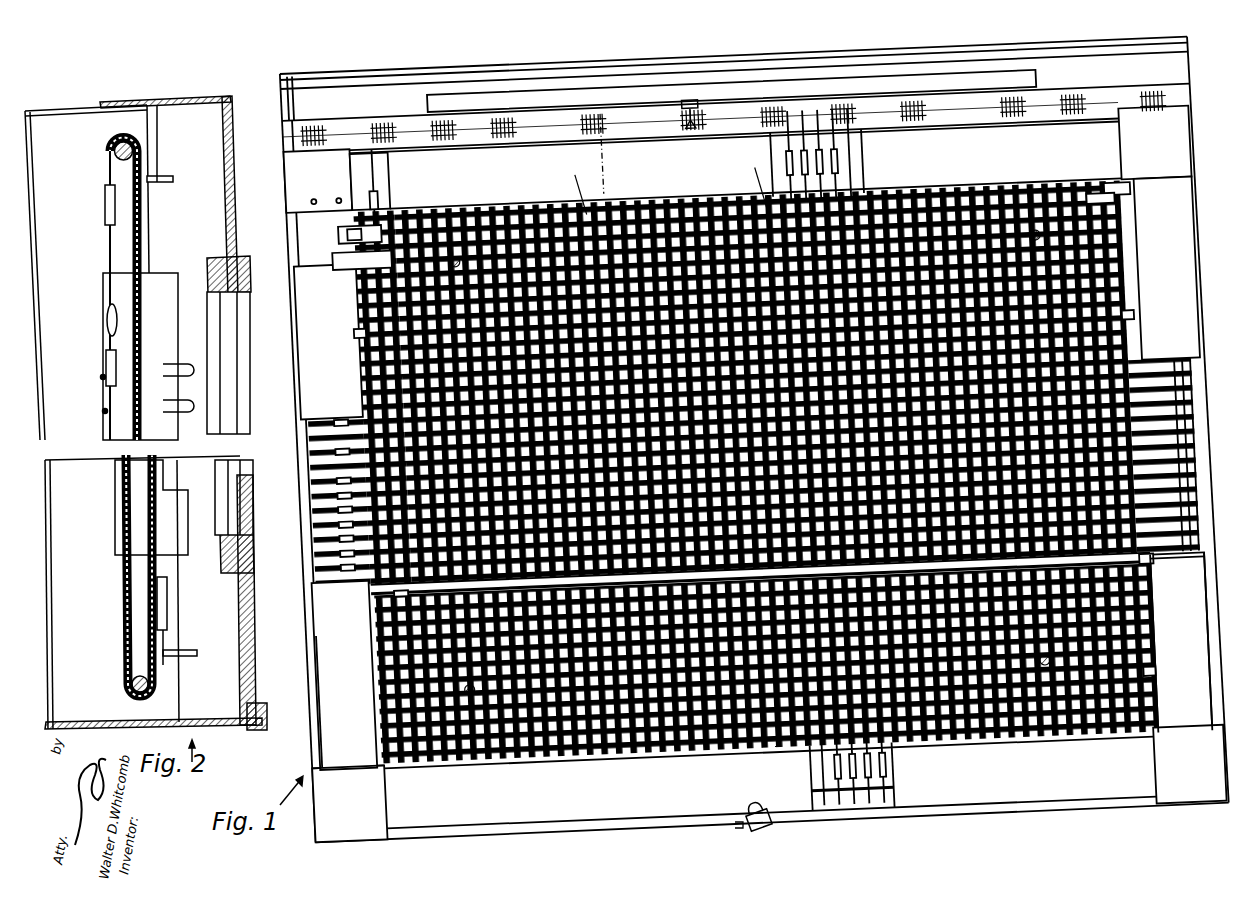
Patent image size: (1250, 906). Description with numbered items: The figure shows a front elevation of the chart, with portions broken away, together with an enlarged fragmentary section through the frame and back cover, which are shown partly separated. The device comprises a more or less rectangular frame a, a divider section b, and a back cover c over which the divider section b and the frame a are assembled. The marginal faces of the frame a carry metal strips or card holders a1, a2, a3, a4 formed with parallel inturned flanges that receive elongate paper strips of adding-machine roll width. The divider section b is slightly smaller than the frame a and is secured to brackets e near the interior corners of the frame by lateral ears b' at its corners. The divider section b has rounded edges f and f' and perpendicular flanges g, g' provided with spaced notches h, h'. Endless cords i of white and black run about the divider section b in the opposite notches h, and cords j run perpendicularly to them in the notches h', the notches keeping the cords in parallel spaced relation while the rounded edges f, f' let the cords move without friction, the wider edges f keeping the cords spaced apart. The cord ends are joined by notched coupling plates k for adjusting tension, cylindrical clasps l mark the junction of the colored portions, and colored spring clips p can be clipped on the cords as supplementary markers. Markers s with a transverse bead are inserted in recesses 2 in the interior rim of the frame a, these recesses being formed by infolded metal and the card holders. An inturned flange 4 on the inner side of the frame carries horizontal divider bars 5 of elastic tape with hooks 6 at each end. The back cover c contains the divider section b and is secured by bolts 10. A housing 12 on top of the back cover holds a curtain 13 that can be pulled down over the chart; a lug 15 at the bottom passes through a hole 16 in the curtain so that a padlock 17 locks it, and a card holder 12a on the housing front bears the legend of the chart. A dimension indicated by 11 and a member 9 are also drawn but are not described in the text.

In FIG. 1, the bolts 10 is at (312, 75).
In FIG. 1, the dimension arrow 11 is at (1213, 345).
In FIG. 1, the housing 12 is at (283, 91).
In FIG. 1, the card holder 12a is at (528, 97).
In FIG. 1, the curtain 13 is at (1083, 98).
In FIG. 1, the lug 15 is at (735, 826).
In FIG. 1, the hole 16 is at (690, 124).
In FIG. 1, the padlock 17 is at (770, 828).
In FIG. 1, the recesses 2 is at (590, 128).
In FIG. 2, the recesses 2 is at (238, 405).
In FIG. 2, the inturned flange 4 is at (212, 256).
In FIG. 1, the horizontal divider bars 5 is at (1060, 212).
In FIG. 1, the hooks 6 is at (372, 233).
In FIG. 2, the block 9 is at (176, 348).
In FIG. 1, the frame a is at (310, 832).
In FIG. 2, the frame a is at (246, 722).
In FIG. 1, the card holder a1 is at (313, 688).
In FIG. 2, the card holder a2 is at (238, 172).
In FIG. 1, the card holder a3 is at (1181, 642).
In FIG. 2, the card holder a3 is at (250, 341).
In FIG. 1, the card holder a4 is at (770, 783).
In FIG. 2, the card holder a4 is at (256, 661).
In FIG. 1, the divider section b is at (326, 261).
In FIG. 2, the divider section b is at (137, 417).
In FIG. 1, the lateral ears b' is at (320, 237).
In FIG. 2, the back cover c is at (36, 183).
In FIG. 1, the brackets e is at (317, 181).
In FIG. 1, the rounded edges f is at (747, 461).
In FIG. 1, the perpendicular flange g is at (747, 487).
In FIG. 1, the notches h is at (747, 512).
In FIG. 2, the notches h is at (183, 388).
In FIG. 1, the endless cords i is at (340, 432).
In FIG. 2, the endless cords i is at (101, 378).
In FIG. 1, the cords j is at (750, 742).
In FIG. 2, the cords j is at (124, 575).
In FIG. 2, the notched coupling plates k is at (108, 266).
In FIG. 1, the cylindrical clasps l is at (578, 205).
In FIG. 2, the cylindrical clasps l is at (168, 613).
In FIG. 1, the spring clips p is at (447, 258).
In FIG. 1, the markers s is at (345, 333).
In FIG. 1, the rounded edges f' is at (831, 447).
In FIG. 2, the rounded edges f' is at (109, 419).
In FIG. 1, the perpendicular flange g' is at (835, 450).
In FIG. 2, the perpendicular flange g' is at (187, 412).
In FIG. 1, the notches h' is at (837, 476).
In FIG. 2, the notches h' is at (182, 400).